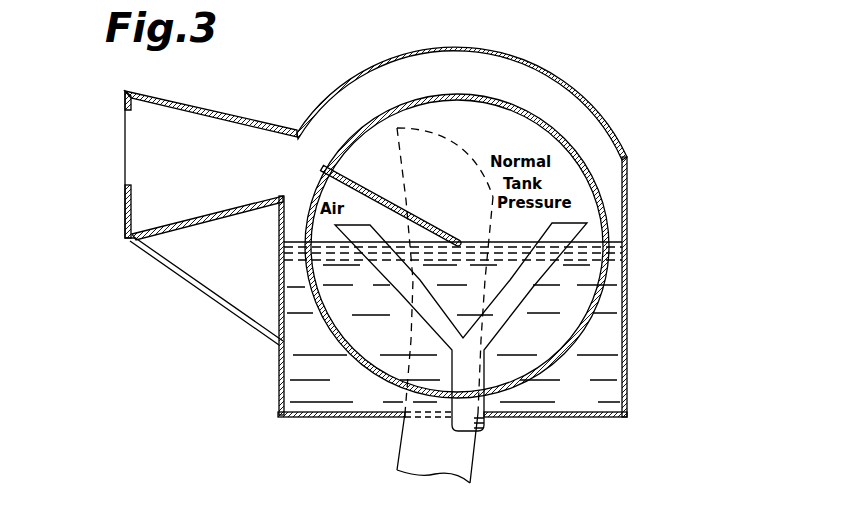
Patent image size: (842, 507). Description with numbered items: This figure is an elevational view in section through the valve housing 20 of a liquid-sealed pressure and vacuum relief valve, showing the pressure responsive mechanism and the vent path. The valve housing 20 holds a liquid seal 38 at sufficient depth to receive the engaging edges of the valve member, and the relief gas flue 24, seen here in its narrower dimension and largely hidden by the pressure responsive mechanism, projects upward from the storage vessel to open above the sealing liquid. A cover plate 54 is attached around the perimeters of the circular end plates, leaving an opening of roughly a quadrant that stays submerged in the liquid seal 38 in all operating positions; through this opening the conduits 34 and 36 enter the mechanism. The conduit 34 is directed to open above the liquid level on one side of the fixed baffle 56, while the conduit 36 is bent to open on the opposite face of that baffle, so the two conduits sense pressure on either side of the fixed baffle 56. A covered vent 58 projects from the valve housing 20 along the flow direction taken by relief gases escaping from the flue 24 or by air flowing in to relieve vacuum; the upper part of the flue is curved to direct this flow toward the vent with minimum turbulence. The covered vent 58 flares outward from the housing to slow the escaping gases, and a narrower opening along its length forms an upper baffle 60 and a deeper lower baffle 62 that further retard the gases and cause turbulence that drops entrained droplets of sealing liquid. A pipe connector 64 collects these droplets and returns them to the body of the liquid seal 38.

The valve housing 20 is at (633, 214).
The relief gas flue 24 is at (405, 433).
The conduit 34 is at (520, 291).
The conduit 36 is at (362, 244).
The liquid seal 38 is at (602, 334).
The cover plate 54 is at (576, 145).
The fixed baffle 56 is at (370, 196).
The covered vent 58 is at (247, 123).
The upper baffle 60 is at (125, 105).
The lower baffle 62 is at (124, 206).
The pipe connector 64 is at (228, 299).